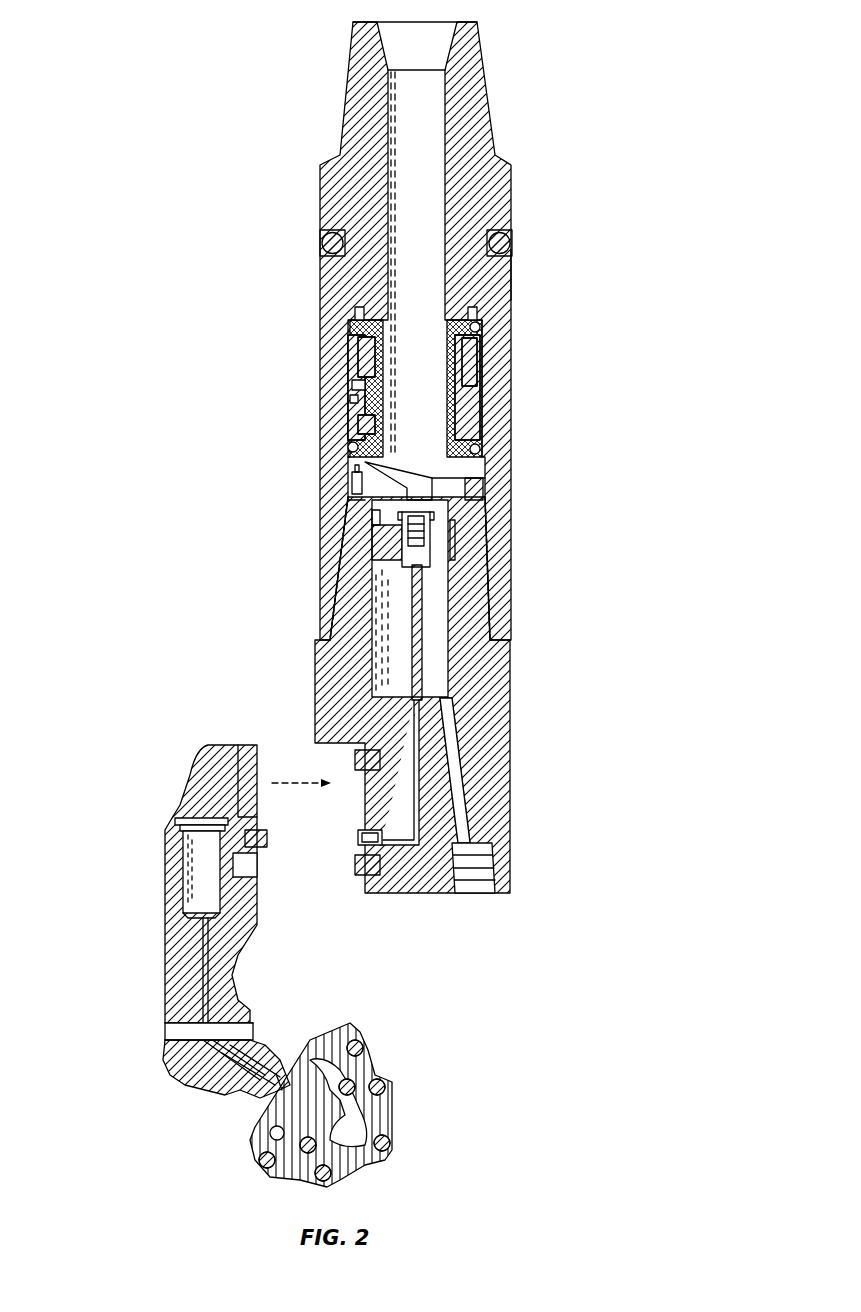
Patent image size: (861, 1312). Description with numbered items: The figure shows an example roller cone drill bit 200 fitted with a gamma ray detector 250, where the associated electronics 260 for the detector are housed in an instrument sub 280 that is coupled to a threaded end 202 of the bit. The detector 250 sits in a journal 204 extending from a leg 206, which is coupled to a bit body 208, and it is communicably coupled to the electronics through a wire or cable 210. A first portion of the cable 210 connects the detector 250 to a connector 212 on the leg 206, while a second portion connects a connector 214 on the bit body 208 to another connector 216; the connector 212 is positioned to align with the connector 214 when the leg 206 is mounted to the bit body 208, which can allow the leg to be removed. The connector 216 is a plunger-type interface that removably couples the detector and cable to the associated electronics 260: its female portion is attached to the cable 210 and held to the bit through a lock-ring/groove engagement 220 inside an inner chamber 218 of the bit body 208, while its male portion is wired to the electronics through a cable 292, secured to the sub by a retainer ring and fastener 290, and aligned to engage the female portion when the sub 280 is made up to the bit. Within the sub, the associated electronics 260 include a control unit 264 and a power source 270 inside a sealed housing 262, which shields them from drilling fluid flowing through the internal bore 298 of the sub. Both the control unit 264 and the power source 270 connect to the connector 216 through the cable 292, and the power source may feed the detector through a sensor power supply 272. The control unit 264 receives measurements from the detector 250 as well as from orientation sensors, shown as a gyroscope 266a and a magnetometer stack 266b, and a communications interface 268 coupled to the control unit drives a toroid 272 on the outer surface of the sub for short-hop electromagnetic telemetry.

The roller cone drill bit 200 is at (132, 46).
The threaded end 202 is at (345, 562).
The journal 204 is at (215, 970).
The leg 206 is at (205, 902).
The bit body 208 is at (512, 722).
The wire or cable 210 is at (420, 802).
The connector 212 is at (262, 838).
The connector 214 is at (360, 832).
The connector 216 is at (434, 546).
The inner chamber 218 is at (445, 632).
The lock-ring/groove engagement 220 is at (370, 522).
The gamma ray detector 250 is at (262, 1074).
The associated electronics 260 is at (346, 331).
The sealed housing 262 is at (450, 321).
The control unit 264 is at (360, 427).
The gyroscope 266a is at (354, 386).
The magnetometer stack 266b is at (352, 400).
The communications interface 268 is at (352, 354).
The power source 270 is at (470, 390).
The toroid 272 is at (360, 307).
The instrument sub 280 is at (513, 291).
The retainer ring and fastener 290 is at (354, 482).
The cable 292 is at (440, 476).
The internal bore 298 is at (425, 210).